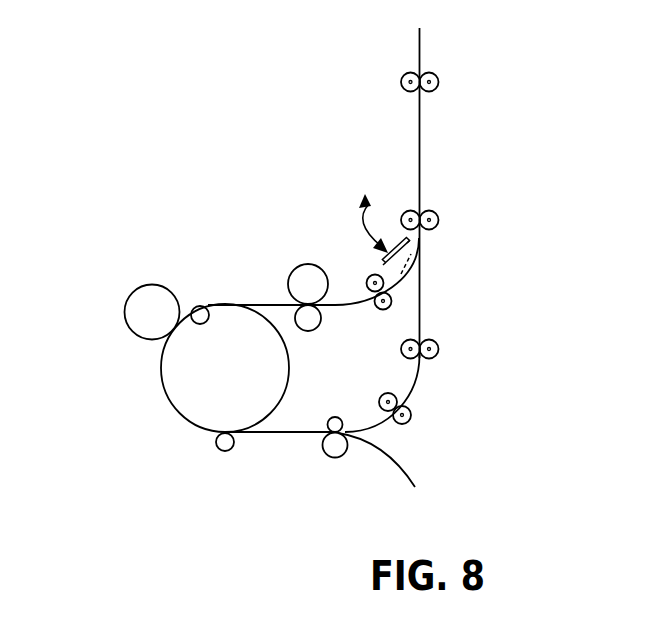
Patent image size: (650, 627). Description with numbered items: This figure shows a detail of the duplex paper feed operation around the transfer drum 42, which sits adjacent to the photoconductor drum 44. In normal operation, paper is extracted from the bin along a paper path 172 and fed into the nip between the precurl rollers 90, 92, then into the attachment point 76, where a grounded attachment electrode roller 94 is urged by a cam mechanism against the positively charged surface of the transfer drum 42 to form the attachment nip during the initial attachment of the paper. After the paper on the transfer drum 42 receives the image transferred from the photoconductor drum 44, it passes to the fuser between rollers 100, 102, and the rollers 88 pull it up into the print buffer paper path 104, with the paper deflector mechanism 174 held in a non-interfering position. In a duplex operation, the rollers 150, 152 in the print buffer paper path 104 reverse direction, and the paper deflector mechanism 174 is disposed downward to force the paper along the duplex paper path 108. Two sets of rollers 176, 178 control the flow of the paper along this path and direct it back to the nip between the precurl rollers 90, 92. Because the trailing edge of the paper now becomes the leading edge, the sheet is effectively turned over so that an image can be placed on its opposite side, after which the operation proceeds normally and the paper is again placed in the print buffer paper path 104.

The transfer drum 42 is at (210, 310).
The photoconductor drum 44 is at (150, 290).
The attachment point 76 is at (235, 430).
The rollers 88 is at (370, 277).
The pre-curl roller 90 is at (343, 418).
The pre-curl roller 92 is at (332, 453).
The attachment electrode roller 94 is at (222, 450).
The fuser roller 100 is at (303, 270).
The fuser roller 102 is at (312, 323).
The print buffer paper path 104 is at (420, 135).
The duplex paper path 108 is at (413, 386).
The roller 150 is at (438, 220).
The roller 152 is at (438, 82).
The paper path 172 is at (395, 458).
The paper deflector mechanism 174 is at (402, 245).
The rollers 176 is at (438, 348).
The rollers 178 is at (411, 412).